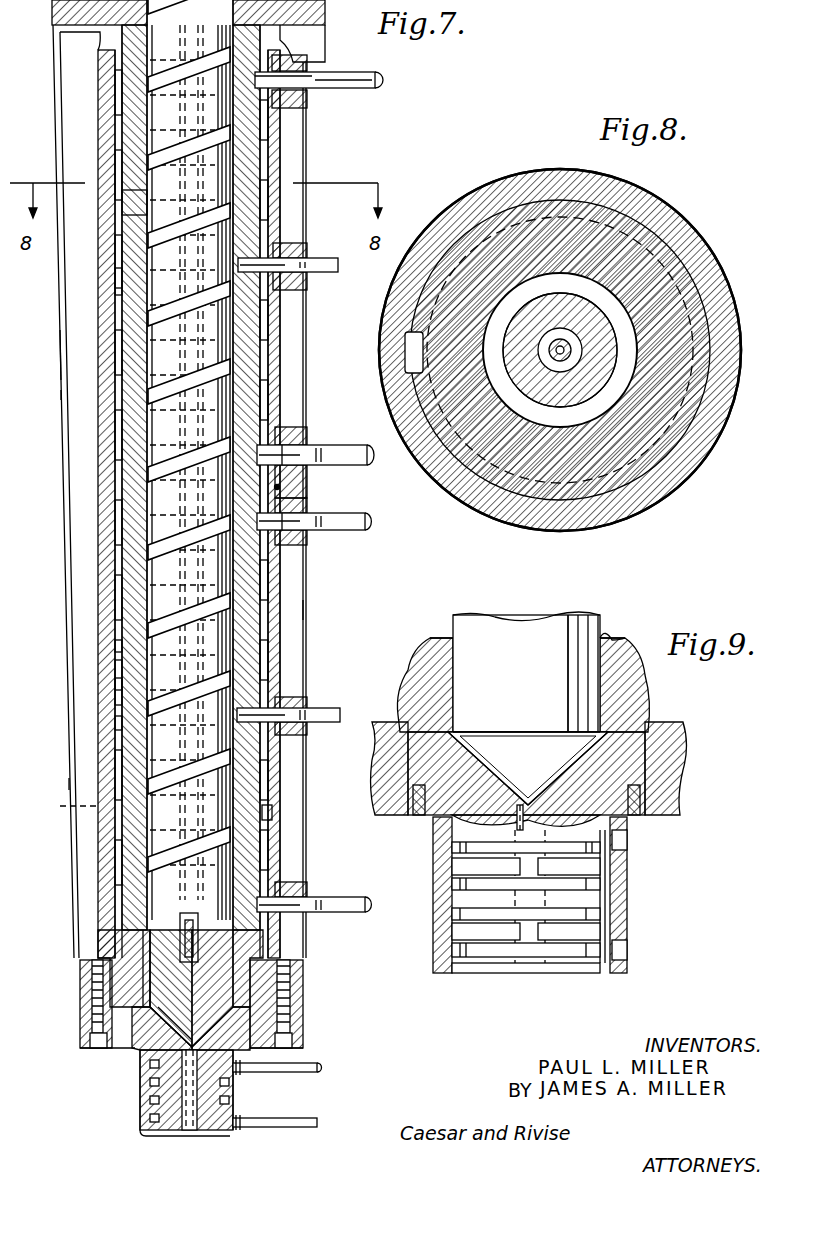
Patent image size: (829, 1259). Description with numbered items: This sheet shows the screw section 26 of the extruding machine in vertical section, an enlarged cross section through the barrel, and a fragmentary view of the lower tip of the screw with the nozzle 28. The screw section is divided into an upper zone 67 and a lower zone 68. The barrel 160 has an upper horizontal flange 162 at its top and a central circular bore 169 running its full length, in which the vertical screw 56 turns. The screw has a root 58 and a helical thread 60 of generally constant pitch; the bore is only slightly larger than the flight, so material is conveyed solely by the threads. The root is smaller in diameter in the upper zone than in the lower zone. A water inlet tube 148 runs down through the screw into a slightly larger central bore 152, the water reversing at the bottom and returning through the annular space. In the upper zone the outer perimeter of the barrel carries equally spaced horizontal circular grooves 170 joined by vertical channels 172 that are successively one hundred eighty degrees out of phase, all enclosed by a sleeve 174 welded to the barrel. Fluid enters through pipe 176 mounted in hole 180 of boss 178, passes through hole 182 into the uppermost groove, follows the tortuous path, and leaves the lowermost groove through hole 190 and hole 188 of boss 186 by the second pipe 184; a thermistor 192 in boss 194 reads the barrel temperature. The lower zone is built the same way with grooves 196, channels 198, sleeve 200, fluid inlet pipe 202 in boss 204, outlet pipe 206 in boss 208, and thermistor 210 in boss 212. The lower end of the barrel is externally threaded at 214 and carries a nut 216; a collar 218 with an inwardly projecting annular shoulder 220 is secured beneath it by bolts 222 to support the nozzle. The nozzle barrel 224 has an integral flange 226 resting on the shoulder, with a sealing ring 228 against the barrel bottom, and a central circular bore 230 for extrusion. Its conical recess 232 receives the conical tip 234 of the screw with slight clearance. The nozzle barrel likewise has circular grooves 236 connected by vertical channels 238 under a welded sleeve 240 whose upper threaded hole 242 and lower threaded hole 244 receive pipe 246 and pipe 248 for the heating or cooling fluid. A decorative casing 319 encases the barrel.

In FIG. 7, the screw section 26 is at (322, 604).
In FIG. 7, the nozzle 28 is at (228, 1085).
In FIG. 9, the nozzle 28 is at (542, 913).
In FIG. 7, the screw 56 is at (230, 165).
In FIG. 9, the screw 56 is at (548, 612).
In FIG. 7, the root 58 is at (120, 200).
In FIG. 8, the root 58 is at (566, 300).
In FIG. 7, the helical thread 60 is at (120, 150).
In FIG. 8, the helical thread 60 is at (548, 280).
In FIG. 9, the helical thread 60 is at (590, 730).
In FIG. 7, the upper zone 67 is at (55, 397).
In FIG. 7, the lower zone 68 is at (66, 783).
In FIG. 7, the water inlet tube 148 is at (264, 810).
In FIG. 8, the water inlet tube 148 is at (572, 335).
In FIG. 7, the central bore 152 is at (175, 905).
In FIG. 8, the central bore 152 is at (566, 352).
In FIG. 7, the barrel 160 is at (286, 388).
In FIG. 8, the barrel 160 is at (699, 475).
In FIG. 9, the barrel 160 is at (652, 682).
In FIG. 7, the upper horizontal flange 162 is at (300, 22).
In FIG. 7, the central circular bore 169 is at (234, 333).
In FIG. 8, the central circular bore 169 is at (496, 466).
In FIG. 9, the central circular bore 169 is at (603, 648).
In FIG. 7, the horizontal circular grooves 170 is at (113, 240).
In FIG. 8, the horizontal circular grooves 170 is at (520, 183).
In FIG. 7, the vertical channels 172 is at (113, 268).
In FIG. 8, the vertical channels 172 is at (705, 357).
In FIG. 7, the sleeve 174 is at (100, 432).
In FIG. 8, the sleeve 174 is at (462, 192).
In FIG. 7, the pipe 176 is at (352, 80).
In FIG. 7, the boss 178 is at (302, 65).
In FIG. 7, the hole 180 is at (300, 100).
In FIG. 7, the hole 182 is at (298, 38).
In FIG. 7, the second pipe 184 is at (358, 460).
In FIG. 7, the boss 186 is at (308, 438).
In FIG. 7, the hole 188 is at (288, 430).
In FIG. 7, the hole 190 is at (292, 480).
In FIG. 7, the thermistor 192 is at (320, 270).
In FIG. 7, the boss 194 is at (305, 248).
In FIG. 7, the horizontal circular grooves 196 is at (115, 645).
In FIG. 7, the vertical channels 198 is at (118, 722).
In FIG. 7, the sleeve 200 is at (100, 585).
In FIG. 7, the fluid inlet pipe 202 is at (335, 522).
In FIG. 7, the boss 204 is at (310, 506).
In FIG. 7, the outlet pipe 206 is at (330, 915).
In FIG. 7, the boss 208 is at (305, 890).
In FIG. 7, the thermistor 210 is at (325, 718).
In FIG. 7, the boss 212 is at (305, 697).
In FIG. 7, the external threads 214 is at (86, 962).
In FIG. 7, the nut 216 is at (82, 993).
In FIG. 7, the collar 218 is at (292, 1018).
In FIG. 9, the collar 218 is at (549, 769).
In FIG. 7, the annular shoulder 220 is at (135, 1050).
In FIG. 9, the annular shoulder 220 is at (410, 808).
In FIG. 7, the bolts 222 is at (92, 1050).
In FIG. 9, the nozzle barrel 224 is at (470, 976).
In FIG. 9, the flange 226 is at (683, 762).
In FIG. 9, the sealing ring 228 is at (658, 722).
In FIG. 7, the central circular bore 230 is at (195, 1130).
In FIG. 9, the central circular bore 230 is at (550, 778).
In FIG. 9, the conical recess 232 is at (468, 768).
In FIG. 7, the conical tip 234 is at (205, 1025).
In FIG. 9, the conical tip 234 is at (505, 765).
In FIG. 9, the horizontal circular grooves 236 is at (455, 846).
In FIG. 9, the vertical channels 238 is at (520, 866).
In FIG. 9, the sleeve 240 is at (628, 896).
In FIG. 9, the upper threaded hole 242 is at (620, 838).
In FIG. 9, the lower threaded hole 244 is at (628, 930).
In FIG. 7, the pipe 246 is at (300, 1070).
In FIG. 7, the pipe 248 is at (318, 1122).
In FIG. 7, the decorative casing 319 is at (58, 350).